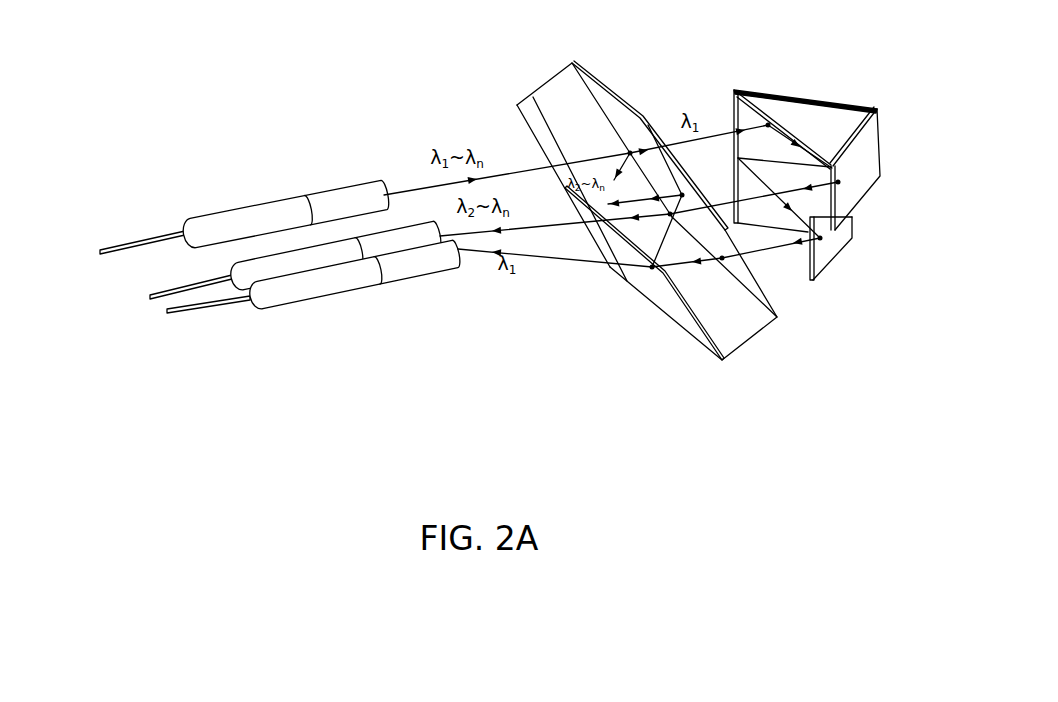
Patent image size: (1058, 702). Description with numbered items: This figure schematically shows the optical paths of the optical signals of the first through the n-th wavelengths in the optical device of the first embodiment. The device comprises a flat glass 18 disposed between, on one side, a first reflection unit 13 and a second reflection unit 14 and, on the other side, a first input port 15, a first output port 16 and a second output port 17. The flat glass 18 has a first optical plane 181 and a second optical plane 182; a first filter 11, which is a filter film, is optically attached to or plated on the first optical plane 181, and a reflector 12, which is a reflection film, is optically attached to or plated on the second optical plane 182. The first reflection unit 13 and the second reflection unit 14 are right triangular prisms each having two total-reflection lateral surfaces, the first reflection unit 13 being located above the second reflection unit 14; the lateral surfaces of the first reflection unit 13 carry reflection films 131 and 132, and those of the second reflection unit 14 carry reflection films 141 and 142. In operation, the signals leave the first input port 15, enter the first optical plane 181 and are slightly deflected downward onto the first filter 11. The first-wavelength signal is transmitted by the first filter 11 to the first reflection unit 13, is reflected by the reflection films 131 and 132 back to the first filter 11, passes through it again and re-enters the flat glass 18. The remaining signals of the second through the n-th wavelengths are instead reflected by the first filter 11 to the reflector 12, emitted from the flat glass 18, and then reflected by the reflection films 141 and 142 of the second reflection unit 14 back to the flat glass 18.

The first filter 11 is at (613, 92).
The reflector 12 is at (658, 298).
The first reflection unit 13 is at (792, 134).
The reflection film 131 is at (785, 97).
The reflection film 132 is at (868, 175).
The second reflection unit 14 is at (840, 276).
The reflection film 141 is at (730, 160).
The reflection film 142 is at (845, 238).
The first input port 15 is at (330, 193).
The first output port 16 is at (427, 267).
The second output port 17 is at (408, 227).
The flat glass 18 is at (631, 180).
The first optical plane 181 is at (527, 143).
The second optical plane 182 is at (740, 273).